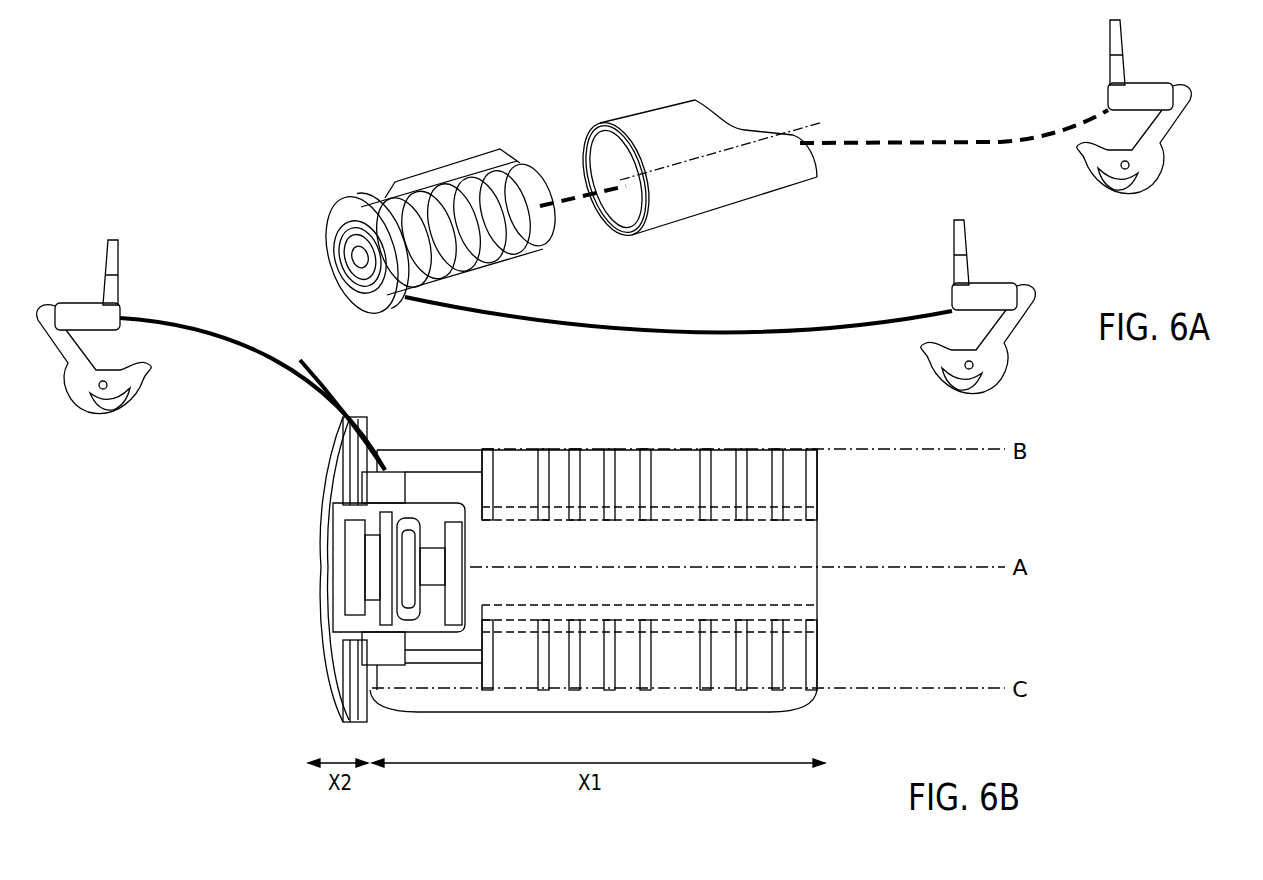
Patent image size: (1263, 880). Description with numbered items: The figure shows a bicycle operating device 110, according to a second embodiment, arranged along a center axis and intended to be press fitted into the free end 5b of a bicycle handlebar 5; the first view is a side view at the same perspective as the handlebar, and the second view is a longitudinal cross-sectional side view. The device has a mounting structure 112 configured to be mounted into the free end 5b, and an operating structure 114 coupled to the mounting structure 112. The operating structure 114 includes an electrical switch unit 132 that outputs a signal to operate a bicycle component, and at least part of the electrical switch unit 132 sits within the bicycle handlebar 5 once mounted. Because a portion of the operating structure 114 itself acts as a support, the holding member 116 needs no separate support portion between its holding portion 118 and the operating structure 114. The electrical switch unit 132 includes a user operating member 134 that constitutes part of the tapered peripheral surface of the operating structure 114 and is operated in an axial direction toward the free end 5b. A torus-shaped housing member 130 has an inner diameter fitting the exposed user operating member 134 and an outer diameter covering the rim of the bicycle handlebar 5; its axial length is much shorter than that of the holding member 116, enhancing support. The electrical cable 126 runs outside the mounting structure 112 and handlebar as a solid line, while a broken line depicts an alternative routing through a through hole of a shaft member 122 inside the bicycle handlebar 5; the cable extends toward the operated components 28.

In FIG. 6A, the bicycle operating device 110 is at (235, 75).
In FIG. 6A, the mounting structure 112 is at (421, 149).
In FIG. 6B, the mounting structure 112 is at (630, 571).
In FIG. 6A, the operating structure 114 is at (404, 237).
In FIG. 6B, the operating structure 114 is at (337, 582).
In FIG. 6A, the holding member 116 is at (448, 166).
In FIG. 6B, the holding member 116 is at (595, 712).
In FIG. 6B, the holding portion 118 is at (743, 447).
In FIG. 6B, the shaft member 122 is at (792, 515).
In FIG. 6A, the electrical cable 126 is at (910, 148).
In FIG. 6B, the electrical cable 126 is at (343, 395).
In FIG. 6A, the housing member 130 is at (383, 313).
In FIG. 6B, the housing member 130 is at (348, 720).
In FIG. 6B, the electrical switch unit 132 is at (429, 516).
In FIG. 6A, the user operating member 134 is at (336, 251).
In FIG. 6B, the user operating member 134 is at (325, 560).
In FIG. 6A, the brake lever 28 is at (1165, 140).
In FIG. 6A, the bicycle handlebar 5 is at (808, 183).
In FIG. 6A, the free end 5b is at (621, 207).